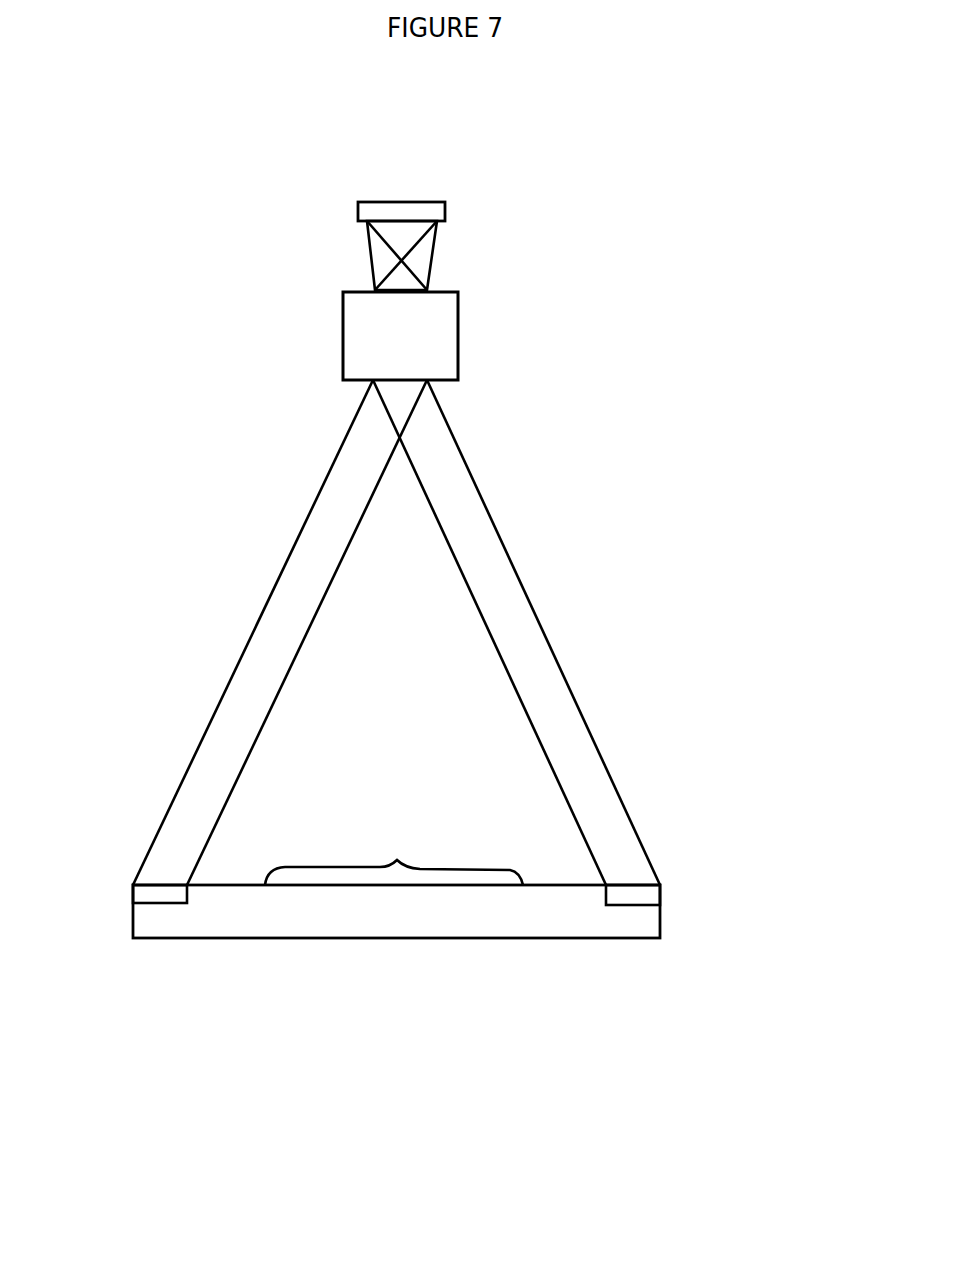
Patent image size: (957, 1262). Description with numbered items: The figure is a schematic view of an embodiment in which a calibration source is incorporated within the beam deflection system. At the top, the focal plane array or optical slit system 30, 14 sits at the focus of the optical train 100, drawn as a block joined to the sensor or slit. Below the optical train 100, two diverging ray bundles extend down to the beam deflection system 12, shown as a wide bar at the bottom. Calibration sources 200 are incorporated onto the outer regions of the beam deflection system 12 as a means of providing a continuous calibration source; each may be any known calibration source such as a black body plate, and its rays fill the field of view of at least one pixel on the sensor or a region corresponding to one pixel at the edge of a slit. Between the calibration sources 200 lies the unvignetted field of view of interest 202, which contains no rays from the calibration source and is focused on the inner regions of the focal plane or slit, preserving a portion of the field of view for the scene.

The focal plane array 30 is at (495, 204).
The optical slit system 14 is at (445, 213).
The optical train 100 is at (458, 335).
The beam deflection system 12 is at (397, 938).
The calibration sources 200 is at (133, 893).
The unvignetted field of view of interest 202 is at (395, 858).